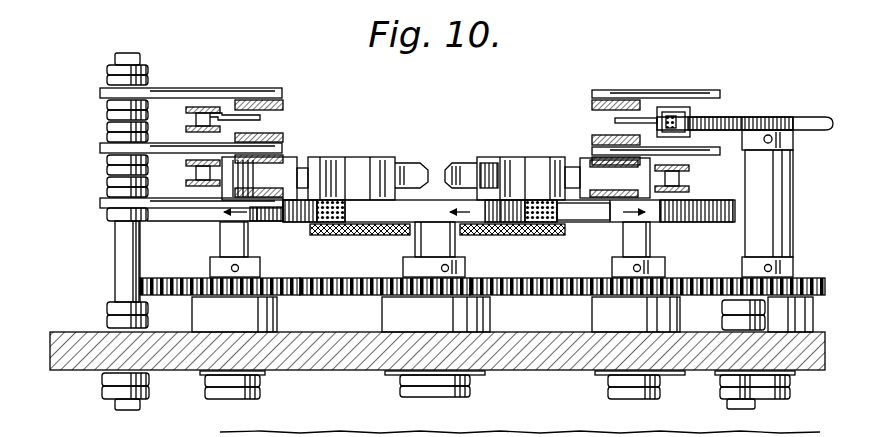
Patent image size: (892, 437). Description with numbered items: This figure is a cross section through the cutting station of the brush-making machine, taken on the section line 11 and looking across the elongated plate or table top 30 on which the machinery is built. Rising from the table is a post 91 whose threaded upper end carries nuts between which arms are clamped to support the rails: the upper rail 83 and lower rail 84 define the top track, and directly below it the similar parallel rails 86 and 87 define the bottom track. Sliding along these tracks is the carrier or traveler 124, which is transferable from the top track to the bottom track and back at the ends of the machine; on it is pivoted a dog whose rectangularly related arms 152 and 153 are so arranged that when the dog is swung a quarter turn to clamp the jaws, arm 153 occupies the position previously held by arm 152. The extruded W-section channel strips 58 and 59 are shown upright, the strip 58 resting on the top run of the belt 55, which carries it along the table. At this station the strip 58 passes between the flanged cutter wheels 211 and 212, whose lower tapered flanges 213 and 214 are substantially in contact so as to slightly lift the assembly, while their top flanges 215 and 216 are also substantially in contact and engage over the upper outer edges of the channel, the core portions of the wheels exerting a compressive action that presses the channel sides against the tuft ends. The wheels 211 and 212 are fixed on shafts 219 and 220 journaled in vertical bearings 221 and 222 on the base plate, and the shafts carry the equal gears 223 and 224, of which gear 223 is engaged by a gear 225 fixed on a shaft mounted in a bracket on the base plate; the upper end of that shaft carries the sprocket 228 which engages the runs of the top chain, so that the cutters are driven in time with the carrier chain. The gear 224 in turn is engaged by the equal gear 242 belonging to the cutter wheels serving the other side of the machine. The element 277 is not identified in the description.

The plate or table top 30 is at (342, 328).
The post 91 is at (133, 264).
The section line 11 is at (110, 252).
The gear 242 is at (264, 281).
The gear 224 is at (390, 279).
The gear 223 is at (581, 278).
The vertical bearing 222 is at (494, 313).
The vertical bearing 221 is at (598, 317).
The shaft 220 is at (455, 247).
The shaft 219 is at (650, 241).
The gear 225 is at (722, 278).
The flanged cutter wheel 211 is at (742, 211).
The sprocket 228 is at (751, 120).
The bracket 277 is at (672, 108).
The upper rail 83 is at (590, 102).
The lower rail 84 is at (612, 122).
The rail 86 is at (593, 136).
The lower rail 87 is at (600, 192).
The top flange 216 is at (413, 207).
The arm 153 is at (465, 170).
The carrier or traveler 124 is at (539, 142).
The arm 152 is at (492, 173).
The lower tapered flange 214 is at (432, 222).
The channel strip 59 is at (348, 211).
The channel strip 58 is at (558, 212).
The top flange 215 is at (690, 203).
The lower tapered flange 213 is at (609, 225).
The flanged cutter wheel 212 is at (414, 218).
The belt 55 is at (521, 228).